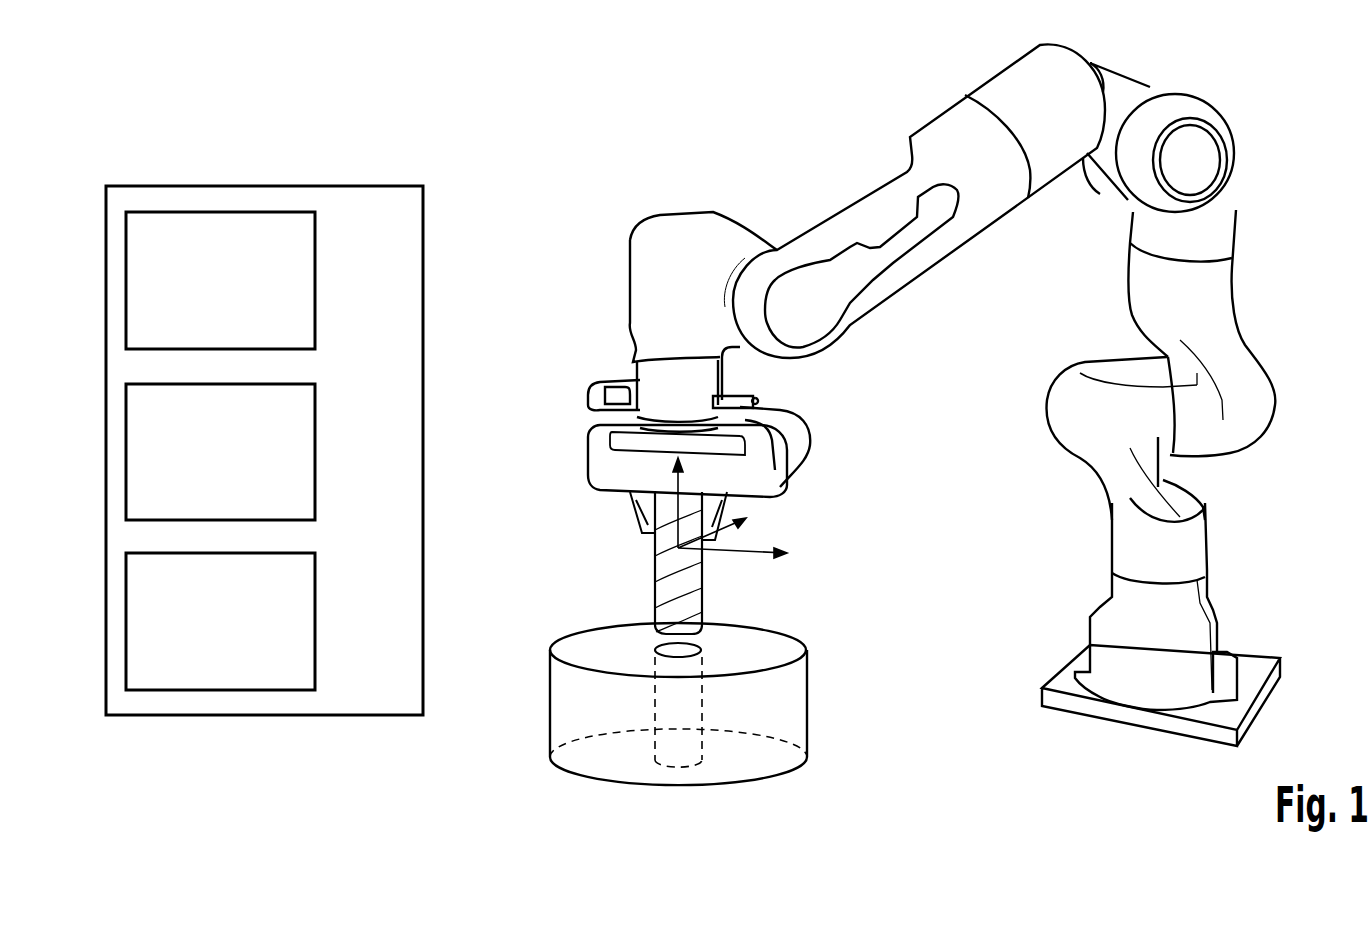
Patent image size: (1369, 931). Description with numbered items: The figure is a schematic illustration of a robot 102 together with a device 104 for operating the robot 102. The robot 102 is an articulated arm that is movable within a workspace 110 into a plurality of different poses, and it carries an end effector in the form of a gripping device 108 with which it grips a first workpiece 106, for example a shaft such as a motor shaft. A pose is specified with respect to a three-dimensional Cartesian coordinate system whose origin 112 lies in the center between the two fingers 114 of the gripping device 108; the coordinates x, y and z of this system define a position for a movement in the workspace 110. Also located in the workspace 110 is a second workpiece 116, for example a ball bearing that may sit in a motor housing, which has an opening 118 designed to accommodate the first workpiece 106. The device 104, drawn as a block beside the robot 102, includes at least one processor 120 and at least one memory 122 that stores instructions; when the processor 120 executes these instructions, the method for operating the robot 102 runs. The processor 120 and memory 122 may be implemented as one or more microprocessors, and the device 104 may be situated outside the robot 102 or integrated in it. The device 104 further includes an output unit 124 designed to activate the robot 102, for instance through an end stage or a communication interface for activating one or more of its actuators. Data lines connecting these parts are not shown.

The robot 102 is at (1260, 405).
The device 104 is at (262, 185).
The first workpiece 106 is at (703, 607).
The gripping device 108 is at (598, 447).
The workspace 110 is at (725, 120).
The origin 112 is at (655, 562).
The fingers 114 is at (645, 525).
The second workpiece 116 is at (790, 713).
The opening 118 is at (703, 698).
The processor 120 is at (318, 622).
The memory 122 is at (318, 453).
The output unit 124 is at (318, 282).